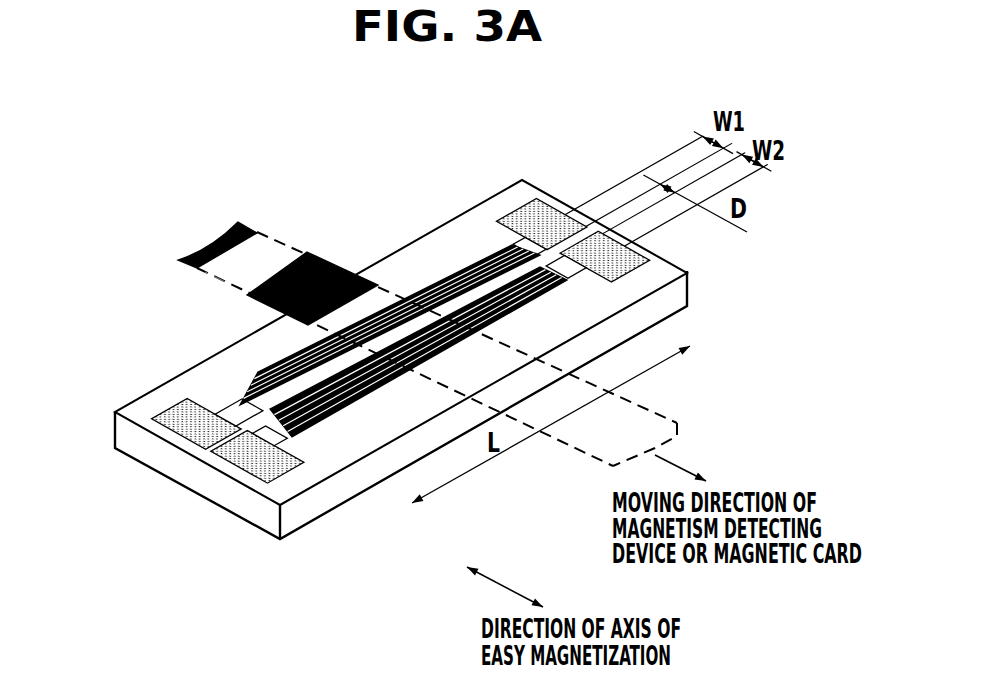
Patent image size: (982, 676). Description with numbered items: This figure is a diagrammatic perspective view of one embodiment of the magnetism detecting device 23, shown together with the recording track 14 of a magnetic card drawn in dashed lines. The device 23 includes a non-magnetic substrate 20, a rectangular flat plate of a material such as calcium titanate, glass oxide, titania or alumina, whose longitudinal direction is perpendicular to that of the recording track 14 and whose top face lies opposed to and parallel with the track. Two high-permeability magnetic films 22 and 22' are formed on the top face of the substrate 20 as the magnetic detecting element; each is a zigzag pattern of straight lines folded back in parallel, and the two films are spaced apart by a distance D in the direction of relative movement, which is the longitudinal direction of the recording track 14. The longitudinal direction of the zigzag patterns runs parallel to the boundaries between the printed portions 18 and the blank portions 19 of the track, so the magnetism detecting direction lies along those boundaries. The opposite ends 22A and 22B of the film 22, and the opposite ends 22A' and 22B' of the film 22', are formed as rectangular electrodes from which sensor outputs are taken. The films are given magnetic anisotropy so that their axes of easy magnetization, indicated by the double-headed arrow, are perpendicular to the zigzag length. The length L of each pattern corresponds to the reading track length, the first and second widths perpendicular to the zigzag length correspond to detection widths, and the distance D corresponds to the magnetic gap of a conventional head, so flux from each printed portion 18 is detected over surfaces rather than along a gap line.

The recording track 14 is at (632, 410).
The printed portion 18 is at (243, 222).
The blank portion 19 is at (217, 280).
The non-magnetic substrate 20 is at (220, 373).
The high-permeability magnetic film 22 is at (390, 270).
The high-permeability magnetic film 22' is at (508, 352).
The end of zigzag pattern (electrode) 22A is at (157, 457).
The end of zigzag pattern (electrode) 22A' is at (258, 494).
The end of zigzag pattern (electrode) 22B is at (541, 196).
The end of zigzag pattern (electrode) 22B' is at (651, 261).
The magnetism detecting device 23 is at (327, 531).